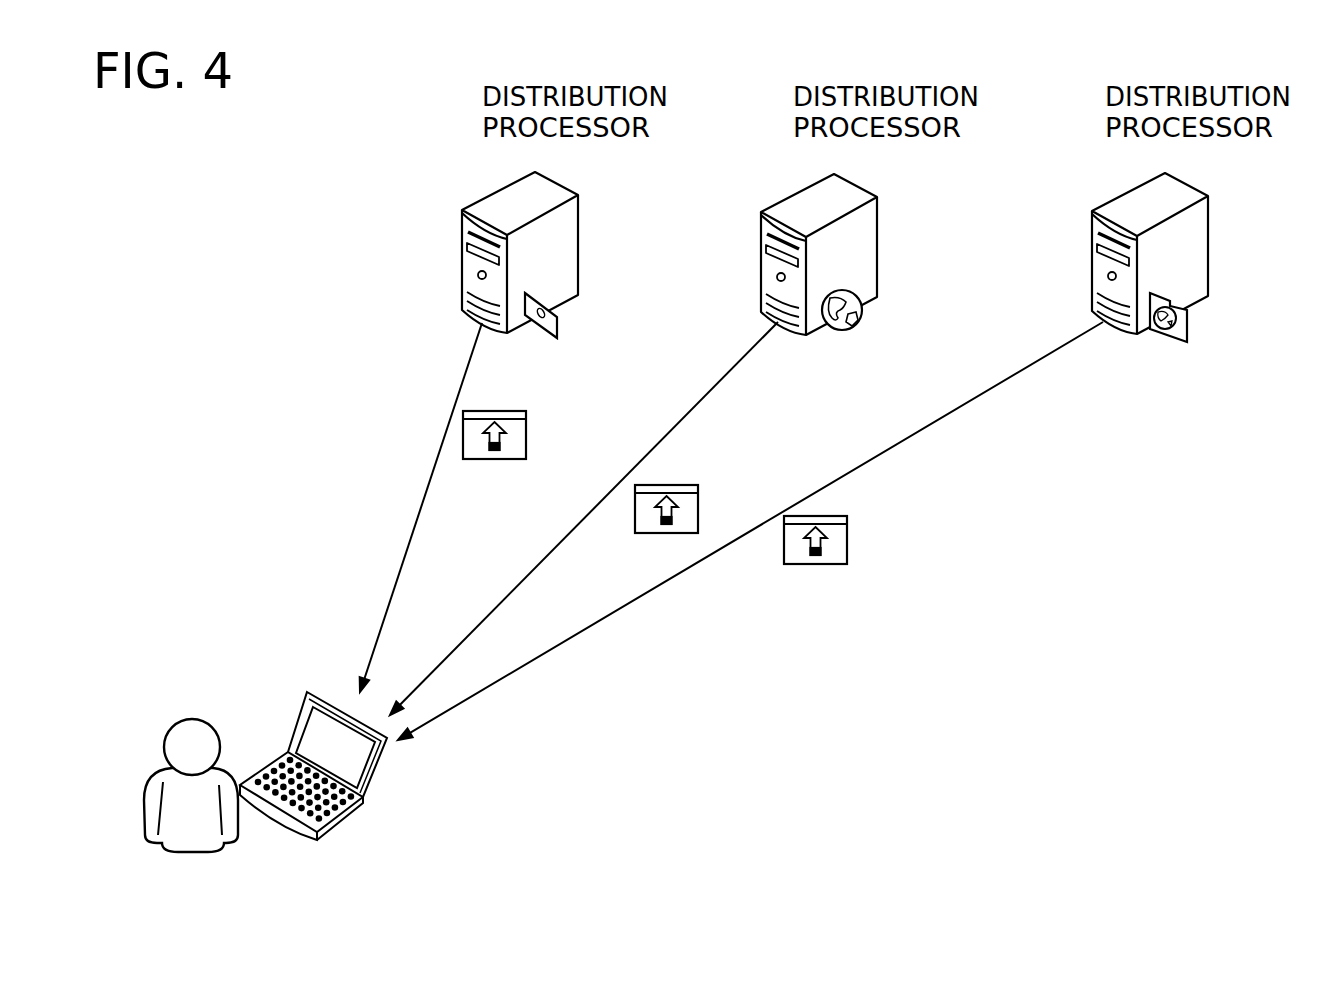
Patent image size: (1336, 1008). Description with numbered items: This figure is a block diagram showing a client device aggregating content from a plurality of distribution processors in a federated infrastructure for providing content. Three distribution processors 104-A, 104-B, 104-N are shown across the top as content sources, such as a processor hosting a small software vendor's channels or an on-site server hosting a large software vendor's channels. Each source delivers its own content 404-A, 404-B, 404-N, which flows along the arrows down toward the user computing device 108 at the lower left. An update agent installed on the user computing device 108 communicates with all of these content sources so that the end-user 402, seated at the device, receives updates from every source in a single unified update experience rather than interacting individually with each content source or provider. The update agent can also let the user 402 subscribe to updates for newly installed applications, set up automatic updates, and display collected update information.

The distribution processor 104-A is at (578, 195).
The distribution processor 104-B is at (877, 199).
The distribution processor 104-N is at (1209, 196).
The content 404-A is at (493, 411).
The content 404-B is at (675, 485).
The content 404-N is at (848, 516).
The end-user 402 is at (179, 716).
The user computing device 108 is at (381, 776).